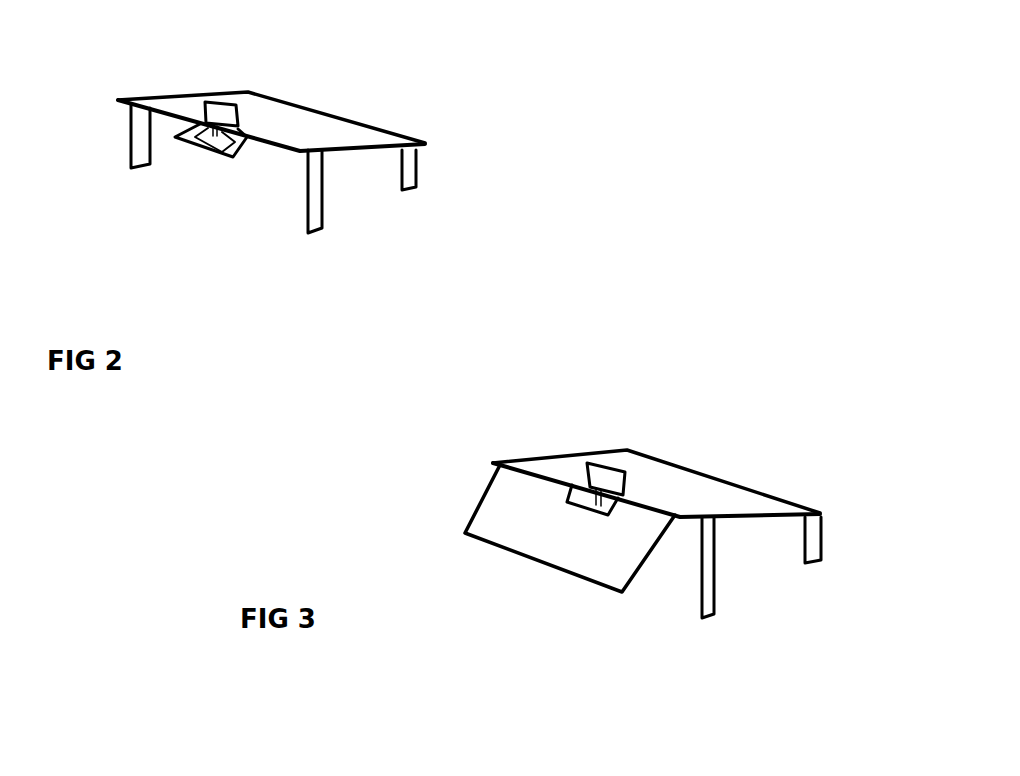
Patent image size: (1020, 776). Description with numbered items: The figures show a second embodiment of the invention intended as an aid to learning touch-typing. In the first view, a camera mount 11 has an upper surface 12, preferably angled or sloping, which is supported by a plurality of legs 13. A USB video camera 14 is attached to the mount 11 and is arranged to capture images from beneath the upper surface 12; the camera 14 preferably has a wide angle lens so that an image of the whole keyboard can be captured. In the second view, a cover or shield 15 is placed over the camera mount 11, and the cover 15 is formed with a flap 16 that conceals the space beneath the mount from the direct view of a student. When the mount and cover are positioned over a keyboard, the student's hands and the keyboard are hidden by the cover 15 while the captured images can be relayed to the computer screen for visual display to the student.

In FIG. 2, the camera mount 11 is at (295, 152).
In FIG. 2, the upper surface 12 is at (281, 122).
In FIG. 2, the legs 13 is at (125, 152).
In FIG. 3, the legs 13 is at (803, 567).
In FIG. 2, the USB video camera 14 is at (217, 100).
In FIG. 3, the USB video camera 14 is at (607, 461).
In FIG. 3, the cover or shield 15 is at (698, 492).
In FIG. 3, the flap 16 is at (558, 548).